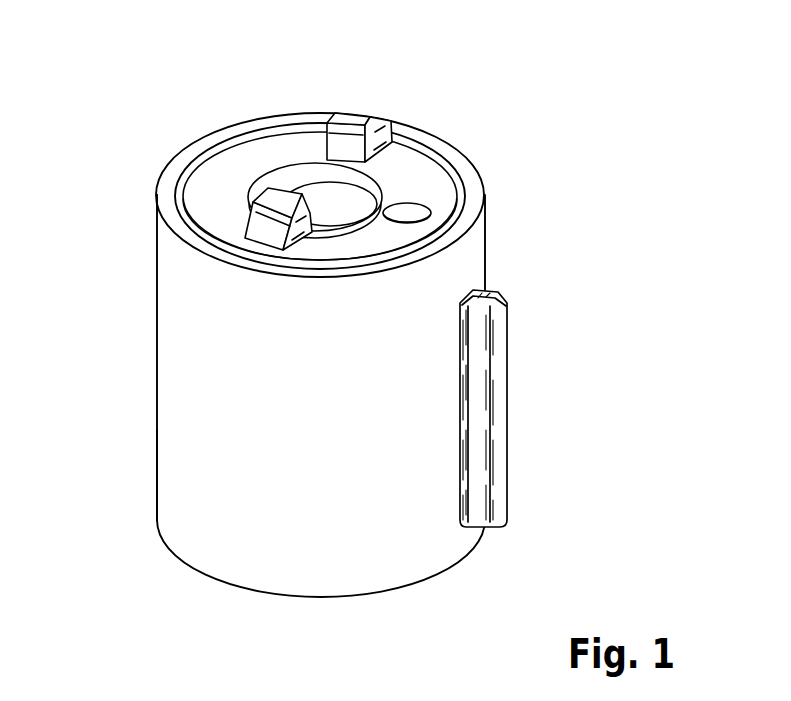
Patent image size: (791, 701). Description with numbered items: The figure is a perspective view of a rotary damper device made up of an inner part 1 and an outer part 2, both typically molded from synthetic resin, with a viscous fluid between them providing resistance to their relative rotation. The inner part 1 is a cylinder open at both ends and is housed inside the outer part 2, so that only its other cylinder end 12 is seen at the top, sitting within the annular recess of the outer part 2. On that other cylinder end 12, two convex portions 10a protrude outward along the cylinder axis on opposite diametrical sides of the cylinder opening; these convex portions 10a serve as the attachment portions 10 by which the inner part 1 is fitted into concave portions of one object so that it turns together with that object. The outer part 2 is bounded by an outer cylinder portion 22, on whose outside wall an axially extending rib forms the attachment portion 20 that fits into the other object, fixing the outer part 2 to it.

The inner part 1 is at (264, 145).
The outer part 2 is at (175, 394).
The attachment portions 10 is at (267, 222).
The convex portions 10a is at (352, 123).
The other cylinder end 12 is at (397, 183).
The attachment portion 20 is at (497, 437).
The outer cylinder portion 22 is at (197, 481).